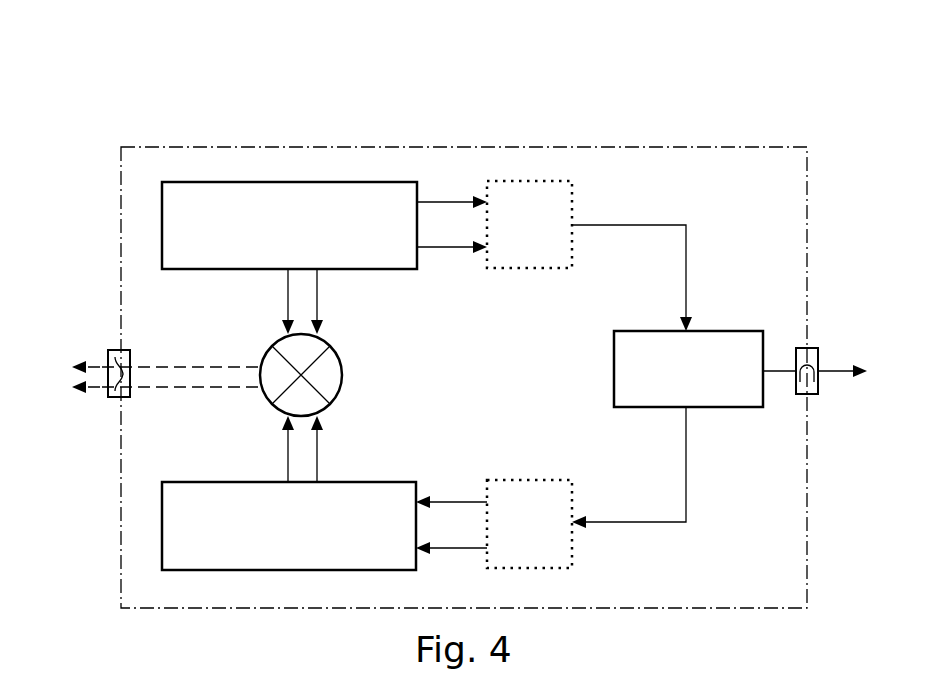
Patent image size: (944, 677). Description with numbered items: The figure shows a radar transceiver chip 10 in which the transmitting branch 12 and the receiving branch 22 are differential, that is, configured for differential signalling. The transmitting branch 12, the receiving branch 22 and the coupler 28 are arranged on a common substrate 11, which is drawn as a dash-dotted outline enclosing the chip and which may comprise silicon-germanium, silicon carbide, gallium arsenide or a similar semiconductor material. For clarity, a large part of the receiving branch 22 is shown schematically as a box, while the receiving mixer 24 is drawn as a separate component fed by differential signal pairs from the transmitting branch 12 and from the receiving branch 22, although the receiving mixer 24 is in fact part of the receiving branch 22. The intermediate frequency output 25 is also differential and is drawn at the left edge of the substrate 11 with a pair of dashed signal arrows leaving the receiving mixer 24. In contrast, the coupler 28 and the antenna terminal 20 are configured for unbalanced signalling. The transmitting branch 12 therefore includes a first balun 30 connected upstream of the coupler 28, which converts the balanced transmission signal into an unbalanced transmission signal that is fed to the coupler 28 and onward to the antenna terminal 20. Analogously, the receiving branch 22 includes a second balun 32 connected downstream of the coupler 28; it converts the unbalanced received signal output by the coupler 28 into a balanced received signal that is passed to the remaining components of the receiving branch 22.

The radar transceiver chip 10 is at (752, 112).
The common substrate 11 is at (446, 147).
The transmitting branch 12 is at (150, 217).
The antenna terminal 20 is at (815, 348).
The receiving branch 22 is at (150, 520).
The receiving mixer 24 is at (277, 410).
The intermediate frequency output 25 is at (117, 350).
The coupler 28 is at (743, 331).
The first balun 30 is at (572, 205).
The second balun 32 is at (572, 549).